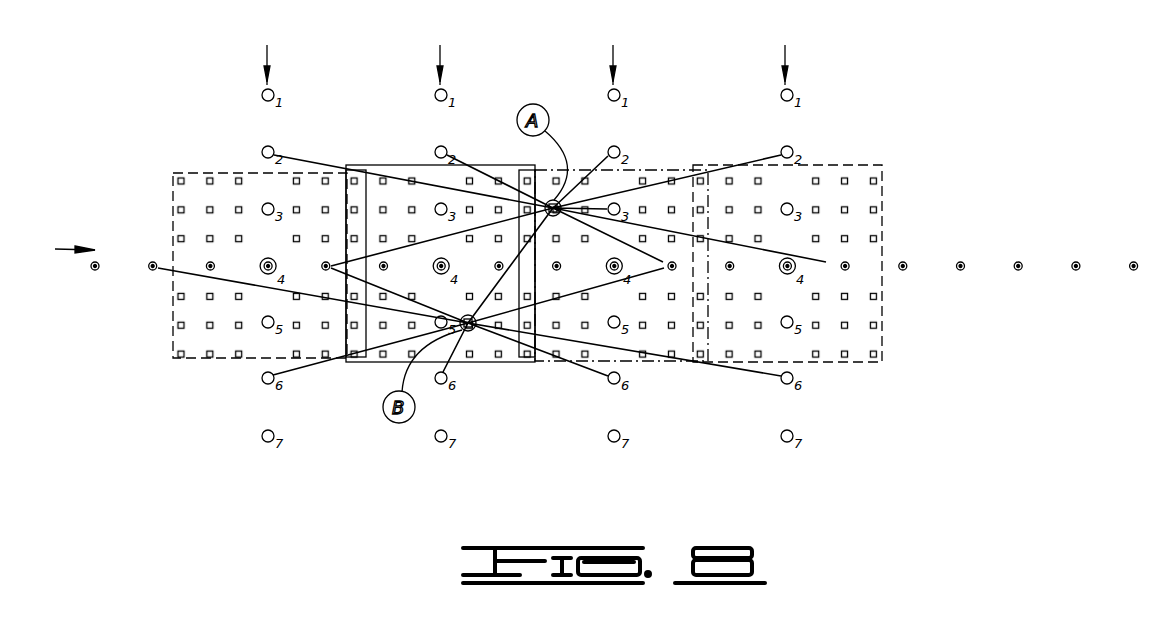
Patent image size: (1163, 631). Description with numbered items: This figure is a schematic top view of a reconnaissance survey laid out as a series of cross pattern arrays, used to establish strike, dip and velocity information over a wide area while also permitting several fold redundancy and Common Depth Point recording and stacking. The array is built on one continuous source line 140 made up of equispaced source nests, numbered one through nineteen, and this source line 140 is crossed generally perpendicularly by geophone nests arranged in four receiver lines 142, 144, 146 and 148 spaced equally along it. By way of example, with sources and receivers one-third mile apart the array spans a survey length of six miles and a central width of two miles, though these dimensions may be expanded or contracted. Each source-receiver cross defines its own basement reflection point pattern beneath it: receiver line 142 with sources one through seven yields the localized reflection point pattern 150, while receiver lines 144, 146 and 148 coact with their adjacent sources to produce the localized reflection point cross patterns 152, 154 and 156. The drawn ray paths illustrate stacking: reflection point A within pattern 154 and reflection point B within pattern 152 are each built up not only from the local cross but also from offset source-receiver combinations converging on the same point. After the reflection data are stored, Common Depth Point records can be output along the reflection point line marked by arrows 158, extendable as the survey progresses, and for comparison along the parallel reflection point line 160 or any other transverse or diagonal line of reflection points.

The source line 140 is at (62, 248).
The receiver line 142 is at (270, 62).
The receiver line 144 is at (443, 62).
The receiver line 146 is at (616, 62).
The receiver line 148 is at (788, 62).
The localized reflection point pattern 150 is at (208, 170).
The localized reflection point cross pattern 152 is at (500, 167).
The localized reflection point cross pattern 154 is at (645, 170).
The localized reflection point cross pattern 156 is at (838, 166).
The reflection point line 158 is at (170, 187).
The reflection point line 160 is at (170, 338).